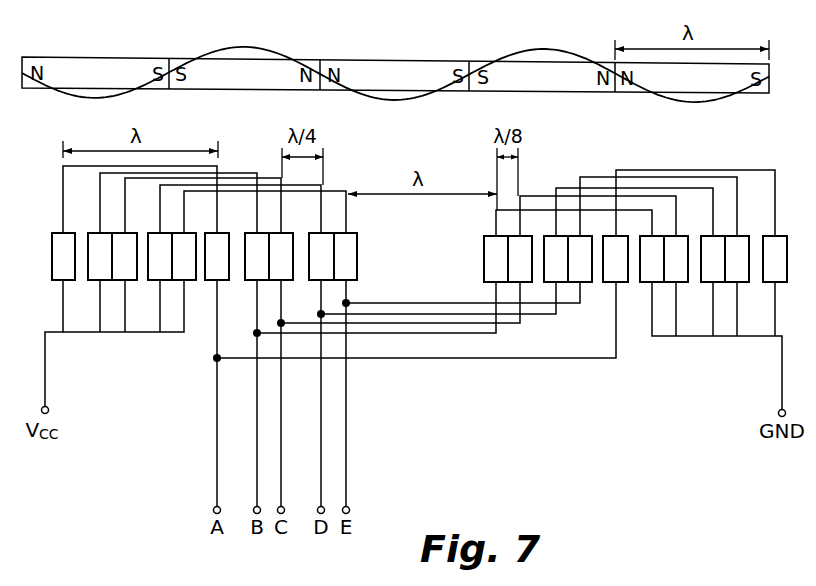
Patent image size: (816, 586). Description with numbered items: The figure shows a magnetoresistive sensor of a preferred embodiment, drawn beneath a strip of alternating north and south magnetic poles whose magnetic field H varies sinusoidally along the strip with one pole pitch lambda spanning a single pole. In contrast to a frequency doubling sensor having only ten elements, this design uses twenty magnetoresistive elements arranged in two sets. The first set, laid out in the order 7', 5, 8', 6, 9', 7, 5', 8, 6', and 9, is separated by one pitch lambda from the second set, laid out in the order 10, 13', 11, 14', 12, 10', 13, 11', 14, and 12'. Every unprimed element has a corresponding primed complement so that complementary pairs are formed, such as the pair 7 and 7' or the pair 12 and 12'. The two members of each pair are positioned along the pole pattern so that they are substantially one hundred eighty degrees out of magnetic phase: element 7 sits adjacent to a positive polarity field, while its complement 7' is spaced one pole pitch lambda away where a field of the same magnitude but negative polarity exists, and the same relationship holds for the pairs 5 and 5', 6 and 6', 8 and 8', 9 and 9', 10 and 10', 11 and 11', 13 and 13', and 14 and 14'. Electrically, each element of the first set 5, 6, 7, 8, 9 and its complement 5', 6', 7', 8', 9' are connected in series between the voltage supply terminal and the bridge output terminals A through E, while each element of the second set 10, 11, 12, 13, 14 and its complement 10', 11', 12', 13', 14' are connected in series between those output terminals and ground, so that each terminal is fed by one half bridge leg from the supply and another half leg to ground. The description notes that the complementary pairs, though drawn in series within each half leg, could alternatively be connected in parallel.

The magnetic field H is at (262, 47).
The magnetoresistive element 5 is at (100, 256).
The magnetoresistive element 5' is at (257, 256).
The magnetoresistive element 6 is at (160, 256).
The magnetoresistive element 6' is at (321, 256).
The magnetoresistive element 7 is at (217, 256).
The magnetoresistive element 7' is at (63, 256).
The magnetoresistive element 8 is at (281, 256).
The magnetoresistive element 8' is at (124, 256).
The magnetoresistive element 9 is at (345, 256).
The magnetoresistive element 9' is at (184, 256).
The magnetoresistive element 10 is at (496, 259).
The magnetoresistive element 10' is at (652, 259).
The magnetoresistive element 11 is at (556, 259).
The magnetoresistive element 11' is at (713, 259).
The magnetoresistive element 12 is at (615, 259).
The magnetoresistive element 12' is at (775, 259).
The magnetoresistive element 13 is at (676, 259).
The magnetoresistive element 13' is at (520, 259).
The magnetoresistive element 14 is at (737, 259).
The magnetoresistive element 14' is at (580, 259).